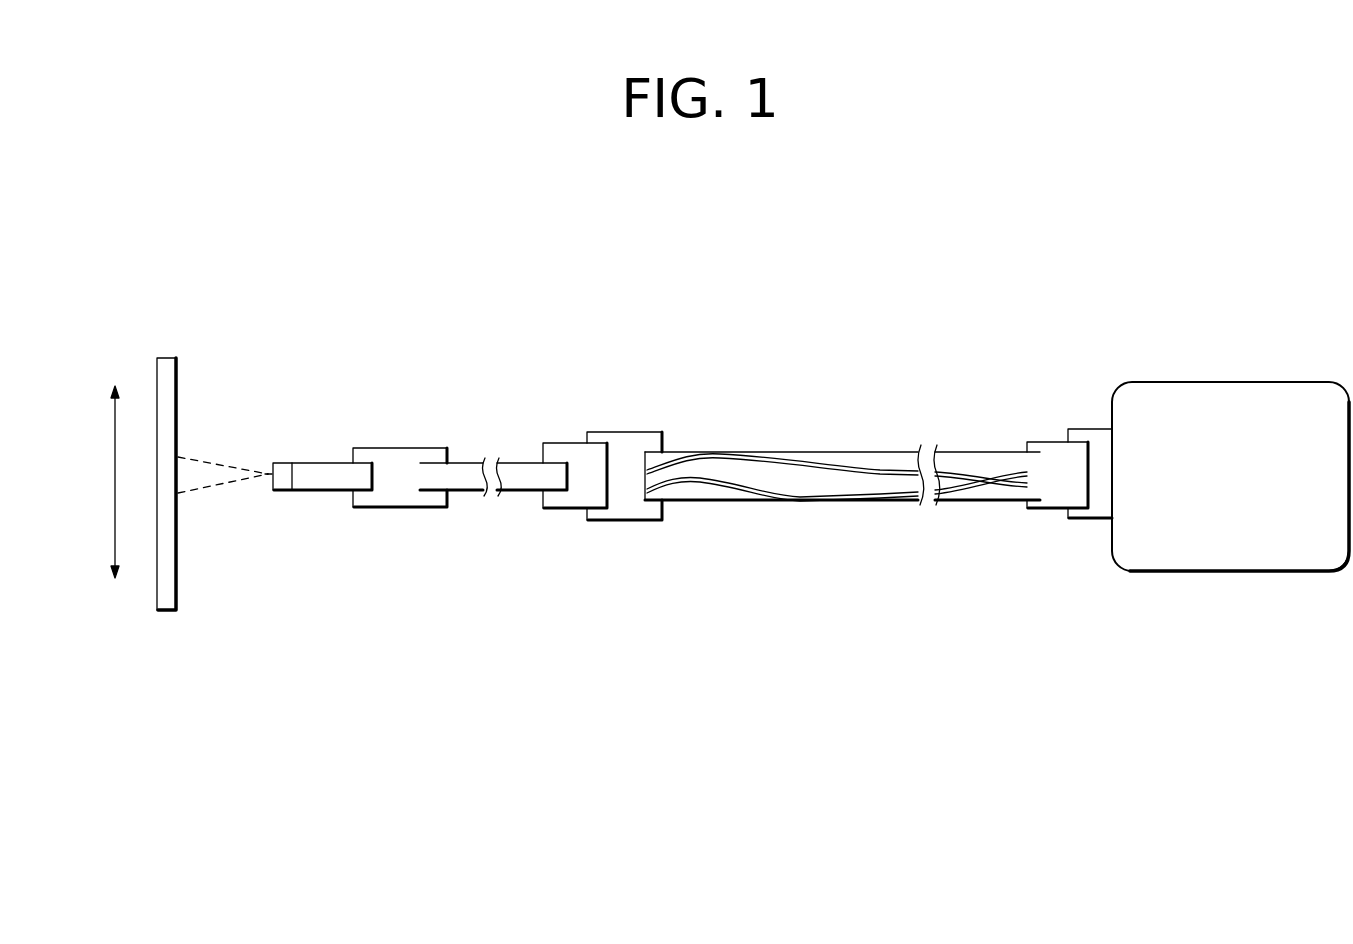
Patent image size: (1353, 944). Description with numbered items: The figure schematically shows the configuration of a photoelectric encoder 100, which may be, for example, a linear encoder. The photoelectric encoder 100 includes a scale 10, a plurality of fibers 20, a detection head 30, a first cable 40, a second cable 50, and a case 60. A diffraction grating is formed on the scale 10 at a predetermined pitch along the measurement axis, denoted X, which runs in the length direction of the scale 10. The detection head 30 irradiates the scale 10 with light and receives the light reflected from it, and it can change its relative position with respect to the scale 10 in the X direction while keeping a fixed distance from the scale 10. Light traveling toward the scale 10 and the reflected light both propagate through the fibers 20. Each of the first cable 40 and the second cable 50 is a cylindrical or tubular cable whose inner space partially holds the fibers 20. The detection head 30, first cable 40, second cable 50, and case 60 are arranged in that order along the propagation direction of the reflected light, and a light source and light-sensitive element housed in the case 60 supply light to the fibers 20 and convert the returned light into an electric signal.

The photoelectric encoder 100 is at (1128, 289).
The scale 10 is at (168, 392).
The fibers 20 is at (868, 465).
The detection head 30 is at (262, 548).
The first cable 40 is at (388, 548).
The second cable 50 is at (1097, 548).
The case 60 is at (1238, 548).